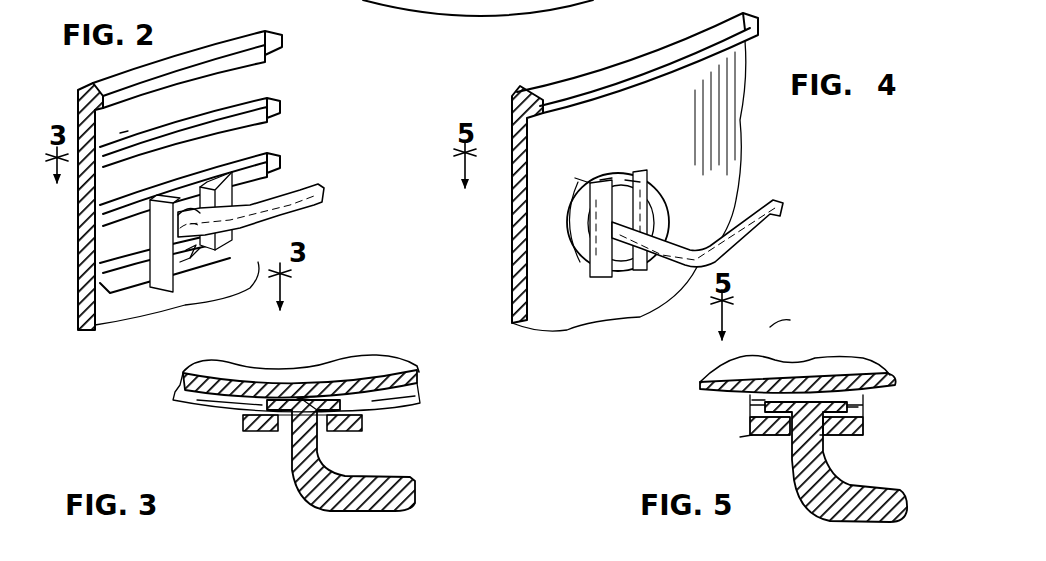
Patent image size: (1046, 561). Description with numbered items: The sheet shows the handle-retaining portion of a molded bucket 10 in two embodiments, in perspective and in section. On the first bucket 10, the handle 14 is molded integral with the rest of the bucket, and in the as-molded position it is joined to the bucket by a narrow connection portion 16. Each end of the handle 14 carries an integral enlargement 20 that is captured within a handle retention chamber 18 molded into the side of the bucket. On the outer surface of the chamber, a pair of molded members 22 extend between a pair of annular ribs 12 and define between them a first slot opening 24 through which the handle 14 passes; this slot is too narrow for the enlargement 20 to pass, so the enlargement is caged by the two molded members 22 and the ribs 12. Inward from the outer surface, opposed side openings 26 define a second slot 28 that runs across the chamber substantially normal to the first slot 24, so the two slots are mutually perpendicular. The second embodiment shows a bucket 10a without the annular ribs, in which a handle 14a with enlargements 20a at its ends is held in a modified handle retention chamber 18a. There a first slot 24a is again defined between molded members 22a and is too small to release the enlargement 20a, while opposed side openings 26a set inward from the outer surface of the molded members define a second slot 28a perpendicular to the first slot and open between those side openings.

In FIG. 3, the bucket 10 is at (387, 367).
In FIG. 4, the bucket 10a is at (662, 130).
In FIG. 2, the annular ribs 12 is at (235, 115).
In FIG. 2, the handle 14 is at (303, 217).
In FIG. 3, the handle 14 is at (397, 487).
In FIG. 4, the bucket handle 14a is at (770, 217).
In FIG. 5, the bucket handle 14a is at (880, 508).
In FIG. 3, the narrow connection portion 16 is at (297, 398).
In FIG. 2, the handle retention chamber 18 is at (157, 303).
In FIG. 3, the handle retention chamber 18 is at (228, 423).
In FIG. 4, the handle retention chamber 18a is at (575, 177).
In FIG. 5, the handle retention chamber 18a is at (740, 437).
In FIG. 2, the enlargement 20 is at (200, 177).
In FIG. 3, the enlargement 20 is at (275, 400).
In FIG. 4, the enlargement 20a is at (600, 178).
In FIG. 5, the enlargement 20a is at (847, 407).
In FIG. 2, the molded members 22 is at (283, 193).
In FIG. 3, the molded members 22 is at (347, 427).
In FIG. 4, the molded members 22a is at (647, 213).
In FIG. 2, the first slot opening 24 is at (190, 262).
In FIG. 3, the first slot opening 24 is at (285, 425).
In FIG. 4, the first slot 24a is at (625, 180).
In FIG. 5, the first slot 24a is at (823, 435).
In FIG. 2, the opposed side openings 26 is at (220, 173).
In FIG. 3, the opposed side openings 26 is at (175, 400).
In FIG. 4, the opposed side openings 26a is at (563, 230).
In FIG. 5, the opposed side openings 26a is at (863, 400).
In FIG. 2, the second slot 28 is at (197, 262).
In FIG. 3, the second slot 28 is at (303, 400).
In FIG. 5, the second slot 28a is at (760, 400).